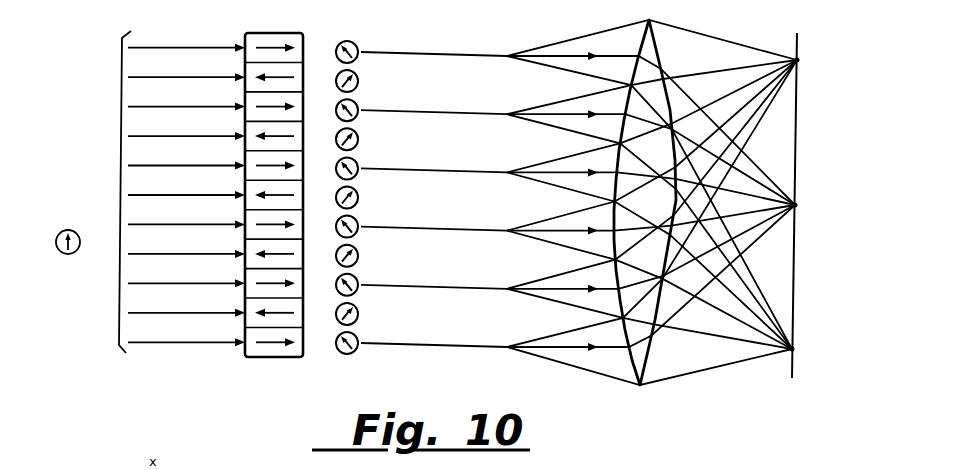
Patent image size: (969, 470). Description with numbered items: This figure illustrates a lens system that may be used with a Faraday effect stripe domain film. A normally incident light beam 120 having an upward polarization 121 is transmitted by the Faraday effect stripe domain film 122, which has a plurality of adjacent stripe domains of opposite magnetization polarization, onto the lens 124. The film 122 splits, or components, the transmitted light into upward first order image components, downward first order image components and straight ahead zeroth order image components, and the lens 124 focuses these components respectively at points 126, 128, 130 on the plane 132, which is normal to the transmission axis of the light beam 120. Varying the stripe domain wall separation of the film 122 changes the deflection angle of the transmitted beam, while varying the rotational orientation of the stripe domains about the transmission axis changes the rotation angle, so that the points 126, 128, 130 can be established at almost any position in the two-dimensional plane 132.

The normally incident light beam 120 is at (156, 192).
The upward polarization 121 is at (56, 246).
The Faraday effect stripe domain film 122 is at (269, 358).
The lens 124 is at (647, 372).
The point 126 is at (797, 60).
The point 128 is at (792, 349).
The point 130 is at (795, 205).
The plane 132 is at (793, 287).